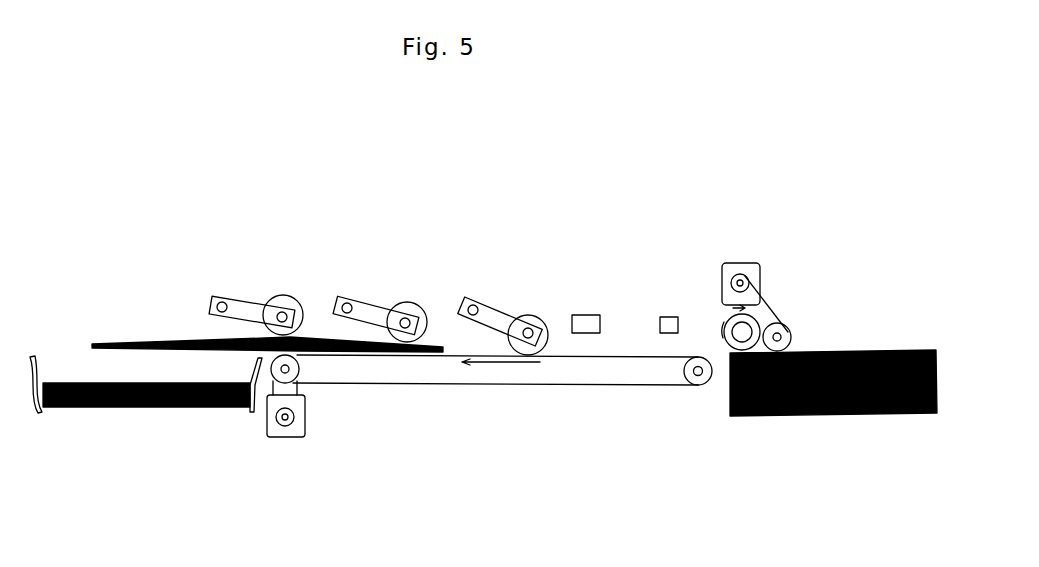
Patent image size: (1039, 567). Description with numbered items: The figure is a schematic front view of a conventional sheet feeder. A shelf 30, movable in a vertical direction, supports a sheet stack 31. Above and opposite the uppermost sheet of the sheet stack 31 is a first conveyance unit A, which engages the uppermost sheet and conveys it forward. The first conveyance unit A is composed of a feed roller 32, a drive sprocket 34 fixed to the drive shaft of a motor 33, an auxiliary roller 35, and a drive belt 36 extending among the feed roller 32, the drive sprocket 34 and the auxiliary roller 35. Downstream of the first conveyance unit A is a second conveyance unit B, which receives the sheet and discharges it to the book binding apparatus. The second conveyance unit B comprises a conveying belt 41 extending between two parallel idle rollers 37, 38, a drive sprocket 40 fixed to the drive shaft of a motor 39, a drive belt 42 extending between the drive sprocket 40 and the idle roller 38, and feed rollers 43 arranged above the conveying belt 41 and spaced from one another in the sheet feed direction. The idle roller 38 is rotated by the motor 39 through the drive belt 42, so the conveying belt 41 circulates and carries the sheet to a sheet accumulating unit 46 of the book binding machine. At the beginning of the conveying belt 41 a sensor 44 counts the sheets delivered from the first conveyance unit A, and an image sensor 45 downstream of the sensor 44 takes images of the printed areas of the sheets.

The shelf 30 is at (913, 413).
The sheet stack 31 is at (937, 380).
The feed roller 32 is at (773, 300).
The motor 33 is at (750, 262).
The drive sprocket 34 is at (732, 262).
The auxiliary roller 35 is at (787, 327).
The drive belt 36 is at (760, 315).
The idle roller 37 is at (703, 392).
The idle roller 38 is at (300, 368).
The motor 39 is at (300, 440).
The drive sprocket 40 is at (280, 433).
The conveying belt 41 is at (517, 388).
The drive belt 42 is at (297, 392).
The feed rollers 43 is at (280, 290).
The sensor 44 is at (665, 312).
The image sensor 45 is at (585, 310).
The sheet accumulating unit 46 is at (153, 413).
The first conveyance unit A is at (825, 207).
The second conveyance unit B is at (447, 410).